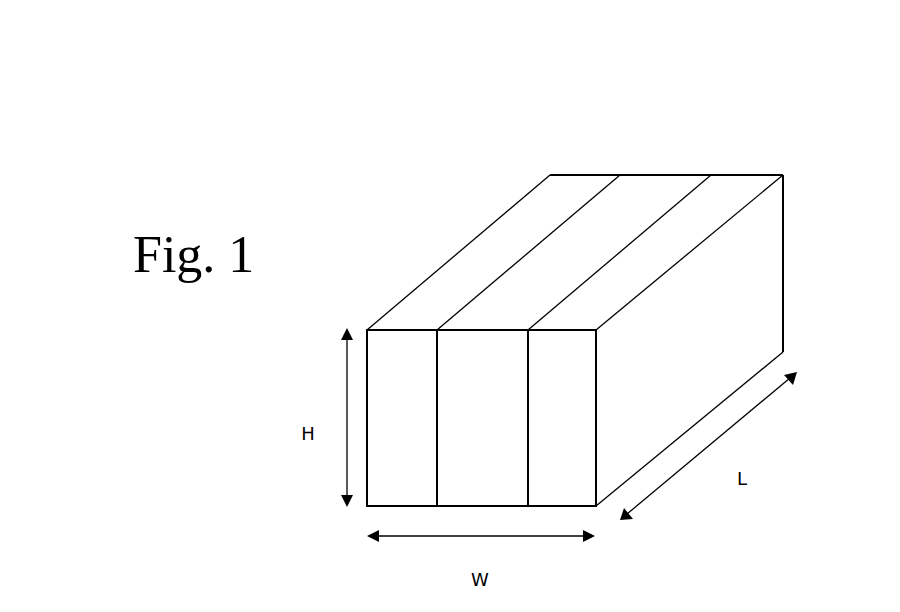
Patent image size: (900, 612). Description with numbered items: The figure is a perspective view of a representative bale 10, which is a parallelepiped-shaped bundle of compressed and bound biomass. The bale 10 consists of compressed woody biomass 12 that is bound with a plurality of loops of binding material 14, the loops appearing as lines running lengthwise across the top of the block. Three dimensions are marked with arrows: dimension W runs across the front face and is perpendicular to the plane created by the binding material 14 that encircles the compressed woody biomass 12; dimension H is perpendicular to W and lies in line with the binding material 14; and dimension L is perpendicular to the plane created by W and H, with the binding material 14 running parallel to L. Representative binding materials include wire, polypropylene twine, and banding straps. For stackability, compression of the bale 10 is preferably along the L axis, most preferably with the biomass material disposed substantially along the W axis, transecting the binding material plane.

The bale 10 is at (425, 240).
The compressed woody biomass 12 is at (719, 319).
The binding material 14 is at (686, 193).